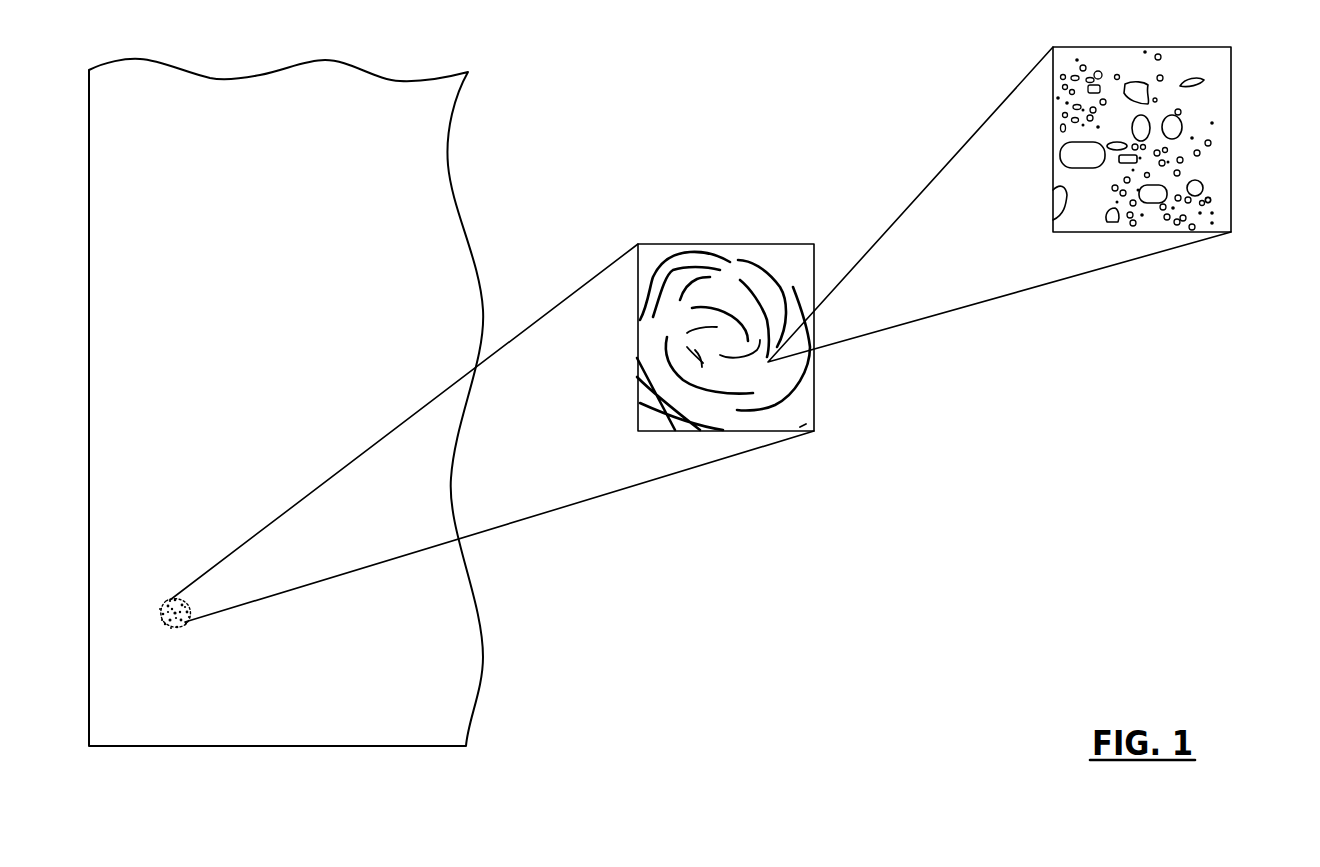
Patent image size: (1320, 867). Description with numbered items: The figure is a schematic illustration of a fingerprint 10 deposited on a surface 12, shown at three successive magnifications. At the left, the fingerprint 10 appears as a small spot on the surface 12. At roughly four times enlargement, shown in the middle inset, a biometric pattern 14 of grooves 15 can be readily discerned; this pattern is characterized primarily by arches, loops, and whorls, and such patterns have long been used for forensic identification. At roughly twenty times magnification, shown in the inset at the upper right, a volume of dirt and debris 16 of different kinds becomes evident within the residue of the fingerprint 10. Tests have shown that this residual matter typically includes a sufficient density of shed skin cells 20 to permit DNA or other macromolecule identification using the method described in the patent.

The fingerprint 10 is at (187, 623).
The surface 12 is at (453, 700).
The biometric pattern 14 is at (797, 373).
The grooves 15 is at (762, 262).
The dirt and debris 16 is at (1129, 82).
The shed skin cells 20 is at (1212, 199).